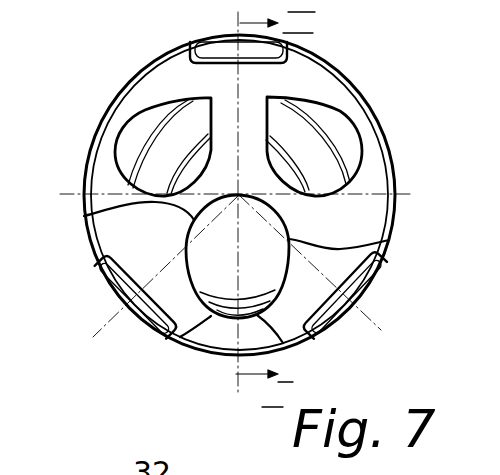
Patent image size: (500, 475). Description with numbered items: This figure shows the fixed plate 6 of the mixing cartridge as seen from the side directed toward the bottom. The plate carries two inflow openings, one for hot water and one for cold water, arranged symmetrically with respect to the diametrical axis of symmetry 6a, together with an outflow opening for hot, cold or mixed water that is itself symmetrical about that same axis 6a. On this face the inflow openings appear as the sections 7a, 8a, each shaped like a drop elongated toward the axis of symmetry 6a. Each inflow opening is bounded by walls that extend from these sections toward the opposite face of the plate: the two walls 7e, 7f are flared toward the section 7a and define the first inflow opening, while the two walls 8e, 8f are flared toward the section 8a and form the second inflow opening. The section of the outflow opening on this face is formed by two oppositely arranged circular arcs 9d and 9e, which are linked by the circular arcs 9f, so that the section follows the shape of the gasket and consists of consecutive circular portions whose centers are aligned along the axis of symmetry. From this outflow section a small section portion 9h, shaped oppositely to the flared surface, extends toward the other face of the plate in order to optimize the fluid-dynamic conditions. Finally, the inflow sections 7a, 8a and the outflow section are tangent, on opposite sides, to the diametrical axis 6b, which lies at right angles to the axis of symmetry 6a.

The fixed plate 6 is at (366, 82).
The diametrical axis of symmetry 6a is at (232, 376).
The diametrical axis 6b is at (412, 195).
The section of the inflow opening 7a is at (358, 123).
The wall of the inflow opening 7e is at (280, 166).
The wall of the inflow opening 7f is at (350, 149).
The section of the inflow opening 8a is at (127, 125).
The wall of the inflow opening 8e is at (191, 182).
The wall of the inflow opening 8f is at (132, 130).
The circular arc 9d is at (84, 216).
The circular arc 9e is at (173, 343).
The circular arcs 9f is at (187, 231).
The small section portion 9h is at (283, 343).